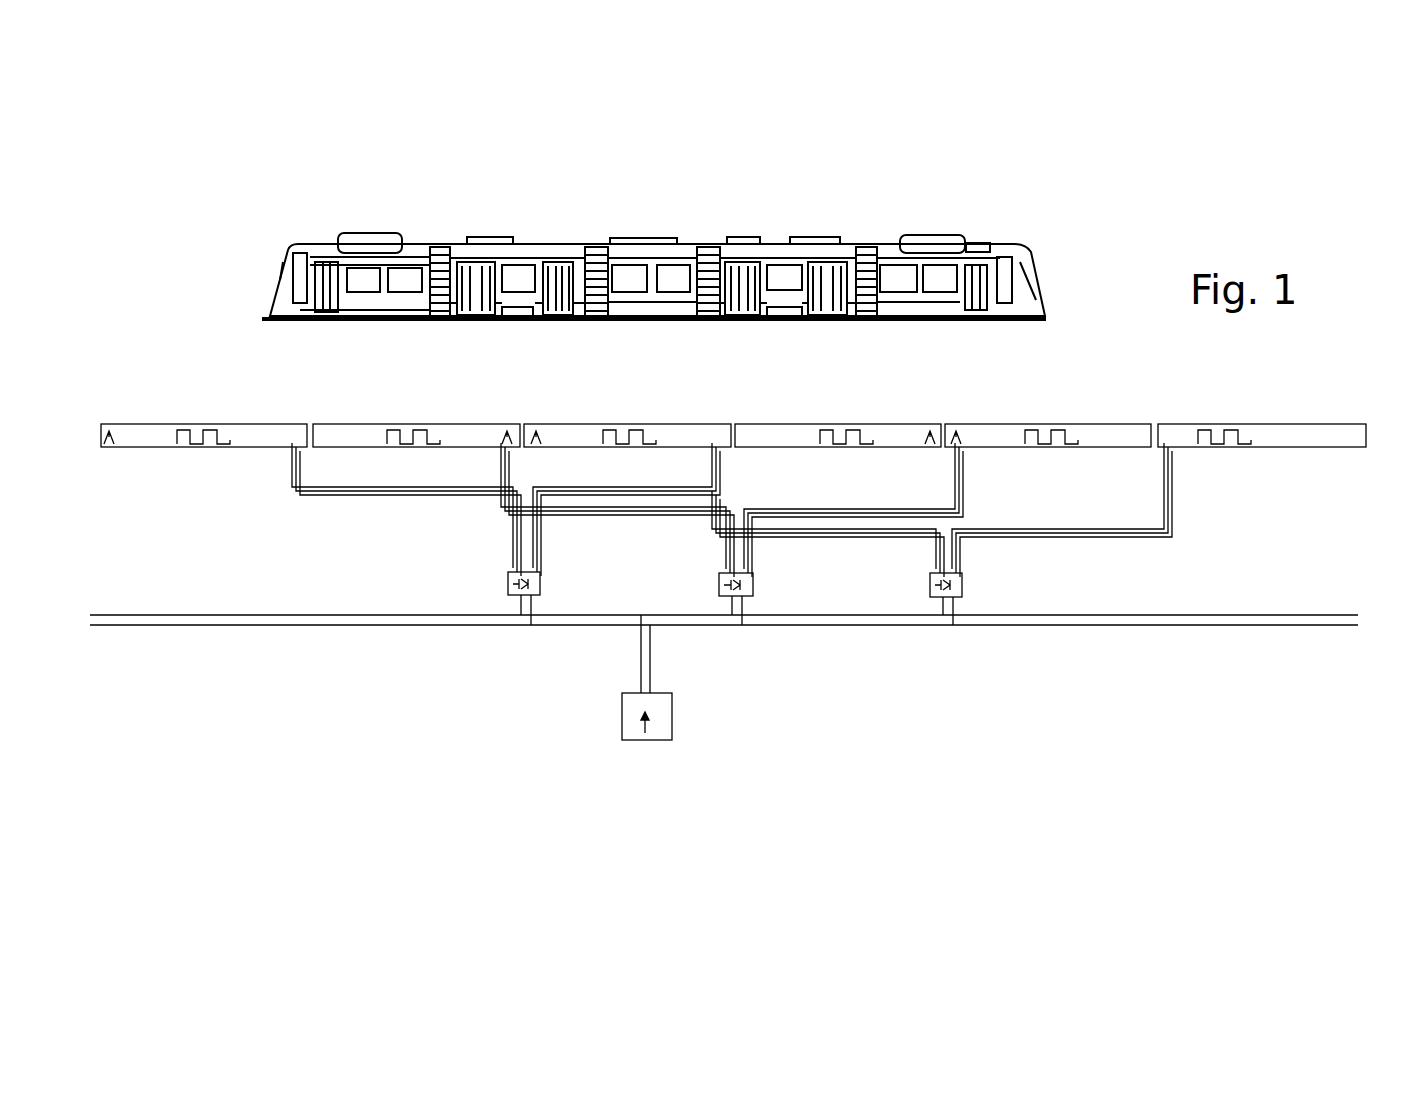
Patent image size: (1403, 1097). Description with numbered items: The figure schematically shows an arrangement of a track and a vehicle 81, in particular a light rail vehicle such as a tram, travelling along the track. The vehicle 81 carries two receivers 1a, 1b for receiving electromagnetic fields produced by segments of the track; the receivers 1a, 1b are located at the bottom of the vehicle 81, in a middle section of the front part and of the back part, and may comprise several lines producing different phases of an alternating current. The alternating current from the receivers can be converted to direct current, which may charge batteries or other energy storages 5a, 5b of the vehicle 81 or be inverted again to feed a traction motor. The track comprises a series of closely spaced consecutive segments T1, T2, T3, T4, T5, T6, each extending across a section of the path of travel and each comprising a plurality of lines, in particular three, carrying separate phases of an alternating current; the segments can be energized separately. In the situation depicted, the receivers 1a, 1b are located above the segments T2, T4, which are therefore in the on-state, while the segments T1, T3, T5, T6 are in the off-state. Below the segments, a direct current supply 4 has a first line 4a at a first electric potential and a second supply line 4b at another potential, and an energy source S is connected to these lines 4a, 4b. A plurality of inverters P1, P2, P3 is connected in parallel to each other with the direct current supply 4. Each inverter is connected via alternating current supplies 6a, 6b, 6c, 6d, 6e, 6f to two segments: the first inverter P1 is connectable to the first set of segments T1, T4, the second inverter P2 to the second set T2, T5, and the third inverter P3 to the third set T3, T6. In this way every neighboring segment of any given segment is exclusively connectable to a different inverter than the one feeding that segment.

The receiver 1a is at (524, 321).
The receiver 1b is at (785, 322).
The energy storage 5a is at (381, 235).
The energy storage 5b is at (915, 240).
The vehicle 81 is at (1006, 238).
The segment T1 is at (187, 424).
The segment T2 is at (400, 424).
The segment T3 is at (595, 424).
The segment T4 is at (793, 424).
The segment T5 is at (1010, 424).
The segment T6 is at (1212, 424).
The alternating current supply 6a is at (514, 533).
The alternating current supply 6b is at (541, 541).
The alternating current supply 6c is at (727, 550).
The alternating current supply 6d is at (783, 509).
The alternating current supply 6e is at (936, 562).
The alternating current supply 6f is at (1028, 530).
The first inverter P1 is at (541, 584).
The second inverter P2 is at (754, 584).
The third inverter P3 is at (963, 585).
The direct current supply 4 is at (724, 630).
The first line 4a is at (1210, 627).
The second supply line 4b is at (1272, 615).
The energy source S is at (673, 716).